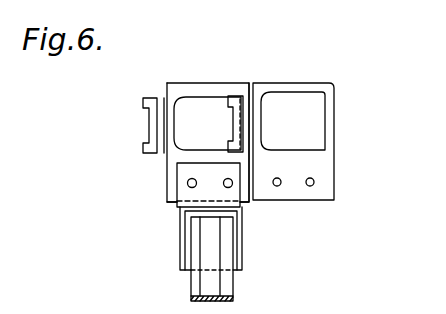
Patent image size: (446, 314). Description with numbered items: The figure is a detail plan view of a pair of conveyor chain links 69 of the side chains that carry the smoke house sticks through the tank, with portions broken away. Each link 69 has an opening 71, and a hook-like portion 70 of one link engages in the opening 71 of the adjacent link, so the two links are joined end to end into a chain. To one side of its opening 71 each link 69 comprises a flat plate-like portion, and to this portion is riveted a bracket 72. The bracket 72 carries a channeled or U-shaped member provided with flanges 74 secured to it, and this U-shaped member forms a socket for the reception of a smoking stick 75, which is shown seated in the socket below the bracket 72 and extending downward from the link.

The link 69 is at (172, 164).
The hook-like portion 70 is at (157, 127).
The opening 71 is at (203, 108).
The bracket 72 is at (228, 195).
The flanges 74 is at (180, 250).
The smoking stick 75 is at (212, 286).